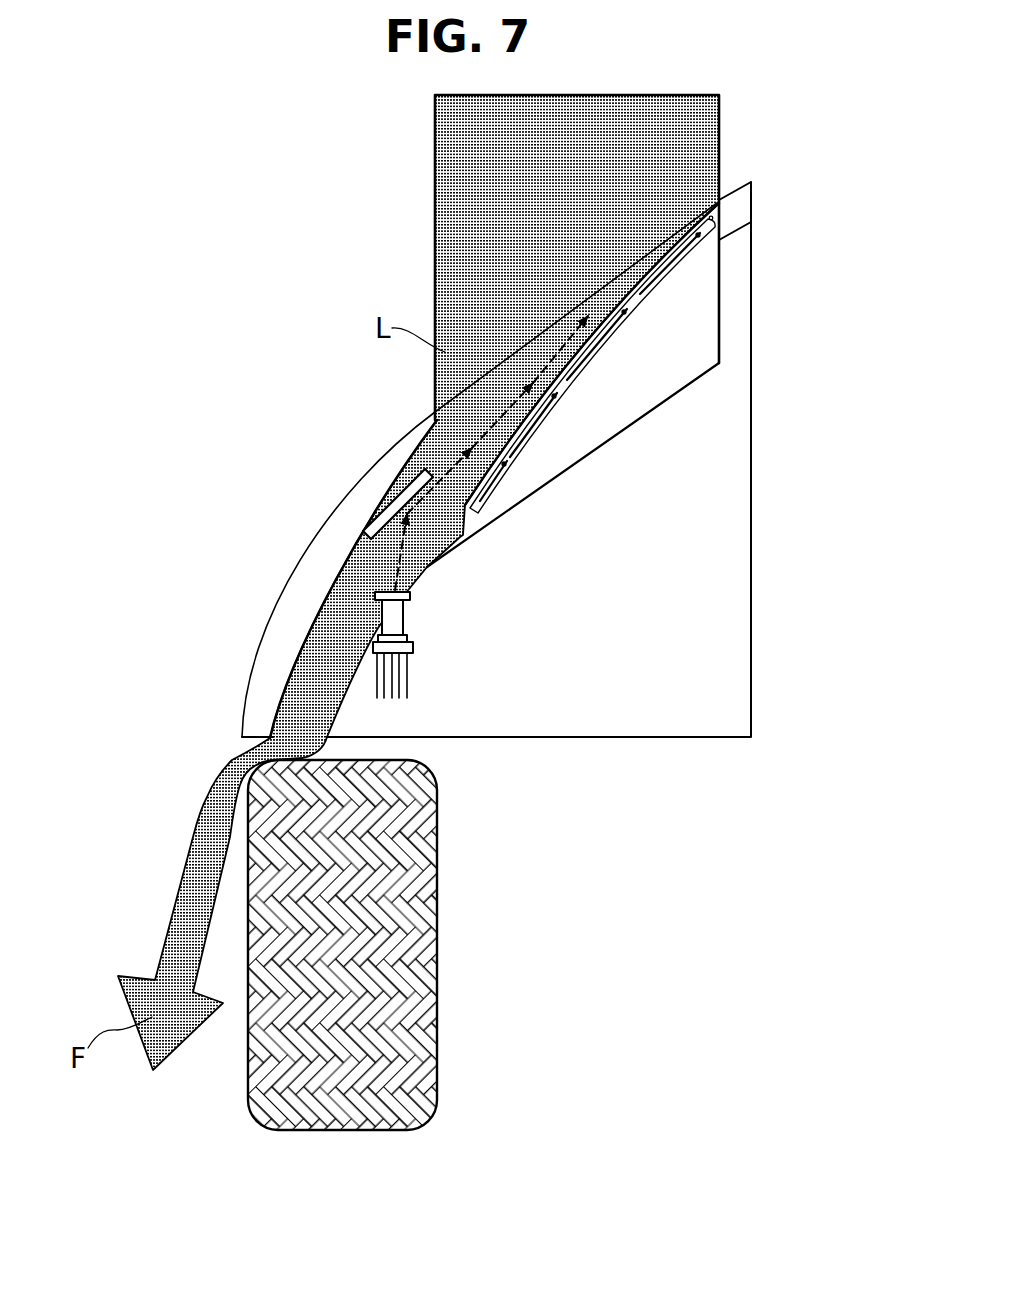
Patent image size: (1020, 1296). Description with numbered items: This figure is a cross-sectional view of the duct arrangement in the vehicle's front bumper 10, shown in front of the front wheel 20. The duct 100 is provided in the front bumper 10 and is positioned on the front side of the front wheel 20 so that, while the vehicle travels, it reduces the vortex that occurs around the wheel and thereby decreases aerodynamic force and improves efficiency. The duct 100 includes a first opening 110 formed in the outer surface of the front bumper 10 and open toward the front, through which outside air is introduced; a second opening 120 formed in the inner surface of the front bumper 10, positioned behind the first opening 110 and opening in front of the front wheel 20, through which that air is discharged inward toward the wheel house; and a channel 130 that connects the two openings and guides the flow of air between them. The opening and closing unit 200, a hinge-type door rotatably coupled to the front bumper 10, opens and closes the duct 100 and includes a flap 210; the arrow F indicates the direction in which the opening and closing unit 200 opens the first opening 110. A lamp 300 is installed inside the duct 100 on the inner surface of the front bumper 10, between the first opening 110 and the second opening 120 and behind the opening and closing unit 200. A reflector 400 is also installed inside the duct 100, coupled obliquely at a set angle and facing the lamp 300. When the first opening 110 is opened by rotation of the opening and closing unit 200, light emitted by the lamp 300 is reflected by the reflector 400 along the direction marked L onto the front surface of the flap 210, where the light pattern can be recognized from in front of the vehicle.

The front bumper 10 is at (737, 208).
The front wheel 20 is at (272, 1057).
The duct 100 is at (418, 582).
The first opening 110 is at (437, 420).
The second opening 120 is at (300, 737).
The channel 130 is at (385, 575).
The opening and closing unit 200 is at (657, 358).
The flap 210 is at (597, 343).
The lamp 300 is at (388, 620).
The reflector 400 is at (483, 540).